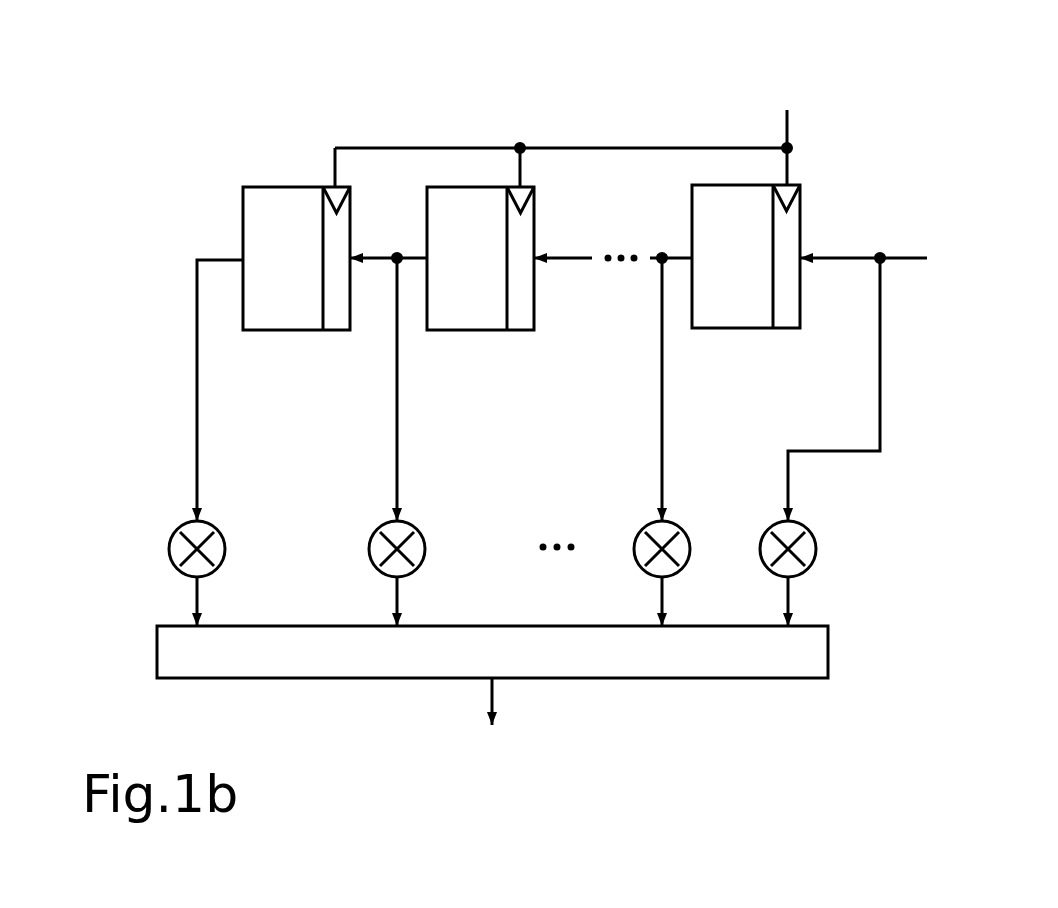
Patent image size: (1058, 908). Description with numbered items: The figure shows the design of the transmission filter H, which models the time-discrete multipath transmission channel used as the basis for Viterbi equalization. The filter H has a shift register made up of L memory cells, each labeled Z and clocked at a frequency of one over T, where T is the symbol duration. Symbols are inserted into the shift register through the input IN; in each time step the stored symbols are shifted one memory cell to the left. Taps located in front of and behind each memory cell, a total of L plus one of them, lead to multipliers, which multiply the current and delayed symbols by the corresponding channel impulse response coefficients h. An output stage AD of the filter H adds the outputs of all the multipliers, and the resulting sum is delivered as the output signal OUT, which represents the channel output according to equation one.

The transmission filter H is at (650, 104).
The output stage AD is at (770, 663).
The input IN is at (867, 256).
The output signal OUT is at (498, 727).